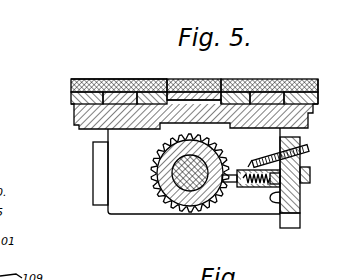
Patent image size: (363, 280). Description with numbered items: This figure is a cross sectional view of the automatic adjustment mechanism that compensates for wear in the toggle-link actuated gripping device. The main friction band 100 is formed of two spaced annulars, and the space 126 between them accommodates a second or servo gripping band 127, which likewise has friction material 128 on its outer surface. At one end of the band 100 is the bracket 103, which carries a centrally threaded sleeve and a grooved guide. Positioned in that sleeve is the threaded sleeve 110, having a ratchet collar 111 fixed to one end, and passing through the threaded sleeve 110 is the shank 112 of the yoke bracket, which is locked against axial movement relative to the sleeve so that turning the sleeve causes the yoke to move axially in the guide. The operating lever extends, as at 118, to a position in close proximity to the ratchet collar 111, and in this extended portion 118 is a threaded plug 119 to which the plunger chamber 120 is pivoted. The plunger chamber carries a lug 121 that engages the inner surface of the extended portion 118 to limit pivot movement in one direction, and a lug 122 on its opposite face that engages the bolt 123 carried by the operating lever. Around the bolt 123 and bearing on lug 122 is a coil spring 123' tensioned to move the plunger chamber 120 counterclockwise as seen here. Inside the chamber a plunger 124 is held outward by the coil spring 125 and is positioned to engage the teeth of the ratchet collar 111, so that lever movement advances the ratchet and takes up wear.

The expansible band 100 is at (71, 97).
The bracket 103 is at (306, 106).
The threaded sleeve 110 is at (158, 152).
The ratchet collar 111 is at (156, 164).
The shank 112 is at (165, 192).
The extended portion of the operating lever 118 is at (300, 197).
The threaded plug 119 is at (310, 175).
The plunger chamber 120 is at (256, 187).
The lug 121 is at (300, 216).
The lug 122 is at (241, 187).
The bolt 123 is at (295, 153).
The coil spring 123' is at (250, 152).
The plunger 124 is at (222, 186).
The coil spring 125 is at (276, 190).
The space 126 is at (165, 80).
The servo gripping band 127 is at (222, 94).
The friction material 128 is at (182, 79).